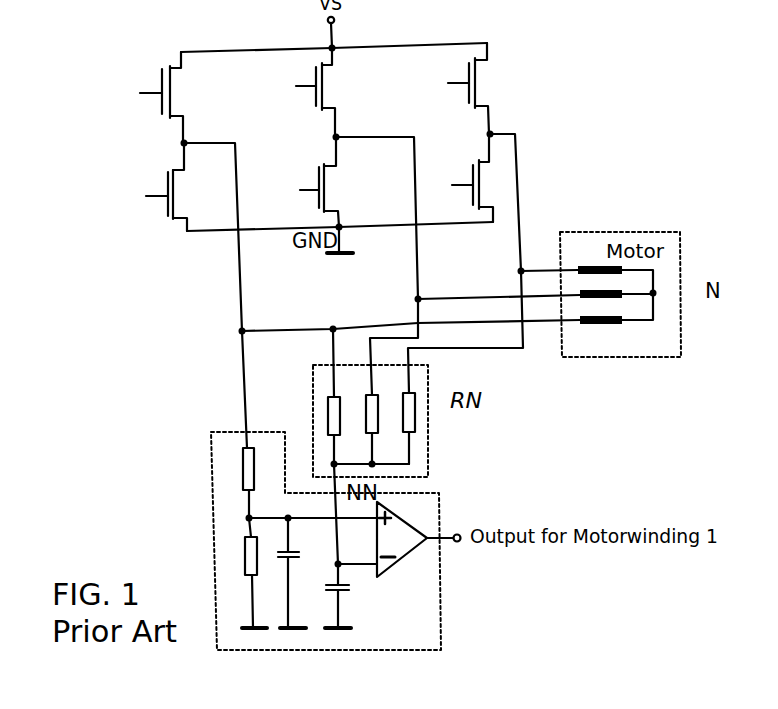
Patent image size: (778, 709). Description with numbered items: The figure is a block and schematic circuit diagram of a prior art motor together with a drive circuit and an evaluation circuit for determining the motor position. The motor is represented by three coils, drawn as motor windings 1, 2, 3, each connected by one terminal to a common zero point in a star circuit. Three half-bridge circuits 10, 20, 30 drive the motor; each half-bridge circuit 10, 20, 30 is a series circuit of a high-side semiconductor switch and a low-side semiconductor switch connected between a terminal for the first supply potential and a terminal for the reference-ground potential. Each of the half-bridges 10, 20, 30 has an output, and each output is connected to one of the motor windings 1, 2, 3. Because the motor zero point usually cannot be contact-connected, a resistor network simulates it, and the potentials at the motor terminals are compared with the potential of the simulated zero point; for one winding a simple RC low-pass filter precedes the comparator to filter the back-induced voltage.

The half-bridge circuit 10 is at (188, 42).
The half-bridge circuit 20 is at (327, 40).
The half-bridge circuit 30 is at (463, 35).
The motor winding 1 is at (610, 308).
The motor winding 2 is at (609, 285).
The motor winding 3 is at (610, 266).